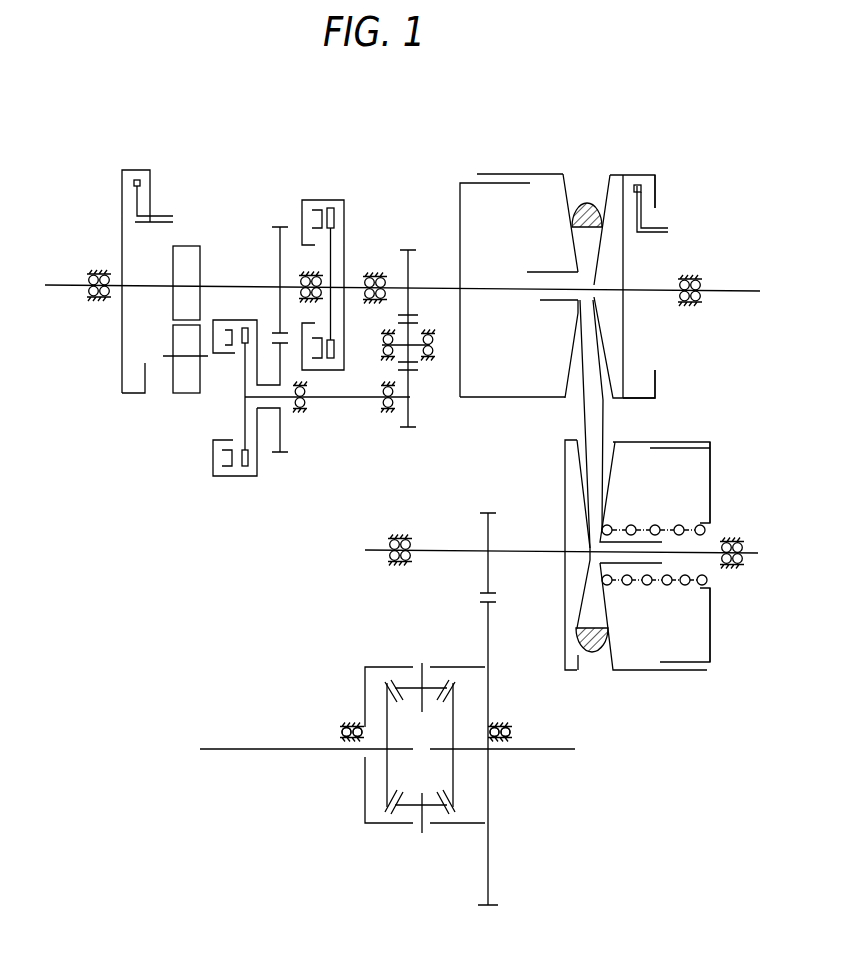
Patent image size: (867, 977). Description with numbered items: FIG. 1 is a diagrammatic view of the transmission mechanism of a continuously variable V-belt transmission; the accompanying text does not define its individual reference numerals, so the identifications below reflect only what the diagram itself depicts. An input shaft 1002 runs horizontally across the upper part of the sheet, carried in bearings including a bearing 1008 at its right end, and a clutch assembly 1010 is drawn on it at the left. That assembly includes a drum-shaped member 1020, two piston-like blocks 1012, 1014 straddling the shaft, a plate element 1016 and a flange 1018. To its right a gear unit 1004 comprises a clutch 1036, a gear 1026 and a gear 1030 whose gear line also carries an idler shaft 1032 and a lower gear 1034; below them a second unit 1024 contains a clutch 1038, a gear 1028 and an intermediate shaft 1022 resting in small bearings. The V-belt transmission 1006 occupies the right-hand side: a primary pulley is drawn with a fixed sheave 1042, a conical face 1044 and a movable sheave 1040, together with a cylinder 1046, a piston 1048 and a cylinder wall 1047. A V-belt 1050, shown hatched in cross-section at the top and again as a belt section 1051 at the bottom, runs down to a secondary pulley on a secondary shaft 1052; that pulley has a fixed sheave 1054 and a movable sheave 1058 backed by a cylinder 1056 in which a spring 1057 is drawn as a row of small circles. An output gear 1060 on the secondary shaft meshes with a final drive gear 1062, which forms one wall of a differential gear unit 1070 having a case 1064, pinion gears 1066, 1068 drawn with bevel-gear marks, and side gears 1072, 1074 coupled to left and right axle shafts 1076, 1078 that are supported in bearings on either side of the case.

The input shaft 1002 is at (401, 270).
The gear transmission unit 1004 is at (338, 192).
The belt type continuously variable transmission 1006 is at (590, 143).
The primary shaft bearing 1008 is at (653, 287).
The clutch unit 1010 is at (160, 303).
The clutch piston 1012 is at (188, 257).
The clutch piston 1014 is at (188, 388).
The clutch plate 1016 is at (126, 370).
The clutch drum flange 1018 is at (130, 387).
The clutch drum 1020 is at (147, 194).
The intermediate shaft 1022 is at (340, 397).
The second clutch unit 1024 is at (236, 487).
The gear 1026 is at (280, 253).
The gear 1028 is at (281, 440).
The gear 1030 is at (410, 270).
The idler shaft 1032 is at (410, 332).
The gear 1034 is at (410, 417).
The clutch 1036 is at (302, 213).
The clutch 1038 is at (213, 458).
The movable sheave of primary pulley 1040 is at (606, 172).
The fixed sheave of primary pulley 1042 is at (490, 193).
The conical face of primary pulley 1044 is at (563, 172).
The hydraulic cylinder of primary pulley 1046 is at (656, 180).
The piston of primary pulley cylinder 1048 is at (643, 200).
The cylinder wall 1047 is at (645, 386).
The V-belt 1050 is at (603, 427).
The belt cross-section 1051 is at (590, 662).
The secondary shaft 1052 is at (435, 552).
The fixed sheave of secondary pulley 1054 is at (566, 625).
The hydraulic cylinder of secondary pulley 1056 is at (650, 670).
The spring 1057 is at (667, 585).
The movable sheave of secondary pulley 1058 is at (613, 672).
The output gear 1060 is at (488, 513).
The final drive gear 1062 is at (488, 635).
The differential case 1064 is at (366, 667).
The differential pinion gear 1066 is at (407, 687).
The differential pinion gear 1068 is at (403, 810).
The differential gear unit 1070 is at (355, 685).
The side gear 1072 is at (385, 778).
The side gear 1074 is at (453, 785).
The left axle shaft 1076 is at (306, 770).
The right axle shaft 1078 is at (550, 753).